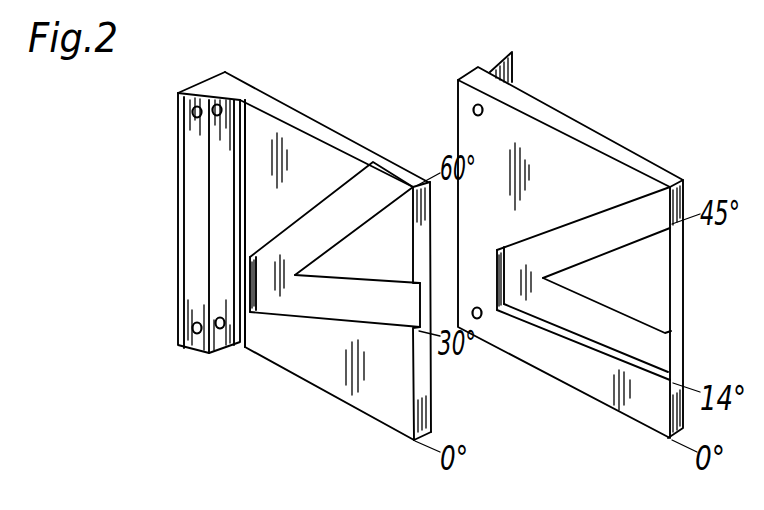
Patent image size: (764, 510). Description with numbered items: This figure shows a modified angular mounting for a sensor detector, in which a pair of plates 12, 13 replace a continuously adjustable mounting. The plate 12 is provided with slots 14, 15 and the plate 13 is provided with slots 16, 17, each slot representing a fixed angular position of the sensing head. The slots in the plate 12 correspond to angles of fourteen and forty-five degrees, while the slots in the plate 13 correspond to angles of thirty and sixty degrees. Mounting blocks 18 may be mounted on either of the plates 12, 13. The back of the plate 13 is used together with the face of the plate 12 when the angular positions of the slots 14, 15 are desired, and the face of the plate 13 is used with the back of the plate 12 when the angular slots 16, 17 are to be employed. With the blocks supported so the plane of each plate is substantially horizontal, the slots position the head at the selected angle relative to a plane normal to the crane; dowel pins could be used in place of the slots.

The plate 12 is at (588, 88).
The plate 13 is at (318, 78).
The slot 14 is at (595, 326).
The slot 15 is at (588, 234).
The slot 16 is at (389, 262).
The slot 17 is at (325, 206).
The mounting block 18 is at (178, 94).